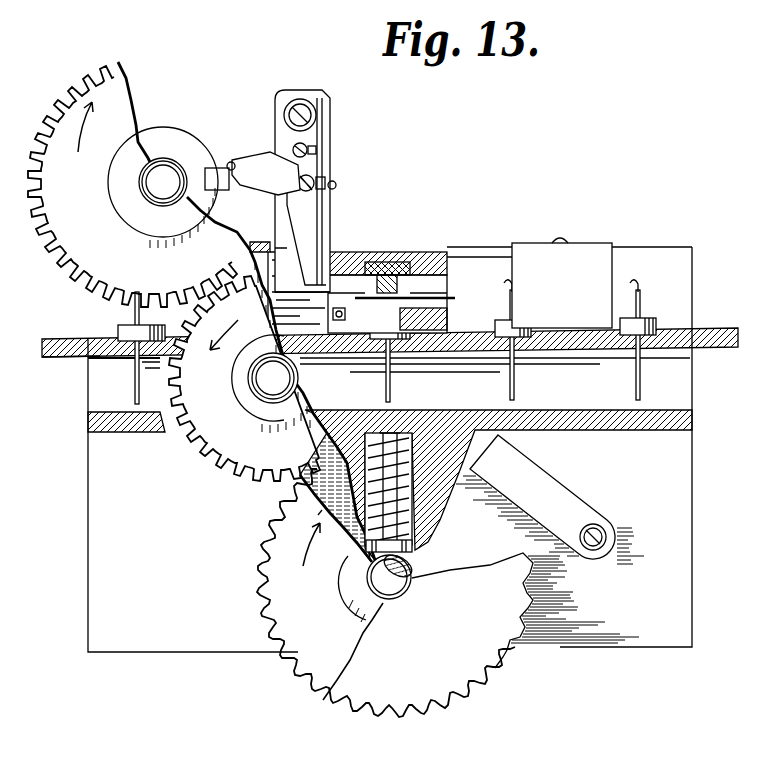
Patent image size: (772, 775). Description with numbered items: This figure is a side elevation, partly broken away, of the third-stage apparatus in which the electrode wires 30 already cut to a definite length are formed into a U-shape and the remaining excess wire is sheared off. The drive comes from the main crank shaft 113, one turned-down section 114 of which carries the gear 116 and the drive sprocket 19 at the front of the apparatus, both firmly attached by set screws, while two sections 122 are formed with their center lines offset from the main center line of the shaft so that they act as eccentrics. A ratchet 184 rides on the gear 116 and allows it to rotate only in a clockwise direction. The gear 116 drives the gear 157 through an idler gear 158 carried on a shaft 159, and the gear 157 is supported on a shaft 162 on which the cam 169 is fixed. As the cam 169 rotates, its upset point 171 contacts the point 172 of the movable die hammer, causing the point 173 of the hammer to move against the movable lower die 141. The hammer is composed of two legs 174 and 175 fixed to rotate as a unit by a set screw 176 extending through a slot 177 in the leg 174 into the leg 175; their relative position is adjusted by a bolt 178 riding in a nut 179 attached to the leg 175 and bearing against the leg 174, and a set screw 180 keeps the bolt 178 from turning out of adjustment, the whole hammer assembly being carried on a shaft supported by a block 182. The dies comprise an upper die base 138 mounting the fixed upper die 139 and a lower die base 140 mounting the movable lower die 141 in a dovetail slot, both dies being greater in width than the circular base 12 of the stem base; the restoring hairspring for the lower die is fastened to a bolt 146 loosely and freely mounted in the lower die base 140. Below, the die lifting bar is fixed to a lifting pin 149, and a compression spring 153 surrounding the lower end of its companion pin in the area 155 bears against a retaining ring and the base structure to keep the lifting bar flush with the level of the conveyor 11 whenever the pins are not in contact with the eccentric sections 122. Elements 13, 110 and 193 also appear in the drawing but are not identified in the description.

The conveyor 11 is at (52, 355).
The circular base 12 is at (660, 330).
The pin 13 is at (640, 300).
The drive sprocket 19 is at (432, 702).
The electrode wire 30 is at (632, 285).
The housing body 110 is at (160, 652).
The main crank shaft 113 is at (410, 566).
The shaft section 114 is at (392, 590).
The gear 116 is at (304, 650).
The eccentric sections 122 is at (406, 585).
The upper die base 138 is at (440, 252).
The fixed upper die 139 is at (392, 262).
The lower die base 140 is at (531, 328).
The movable lower die 141 is at (447, 312).
The bolt 146 is at (333, 312).
The lifting pin 149 is at (412, 500).
The compression spring 153 is at (412, 545).
The area 155 is at (348, 488).
The gear 157 is at (62, 264).
The idler gear 158 is at (218, 472).
The shaft 159 is at (262, 386).
The shaft 162 is at (152, 190).
The cam 169 is at (192, 129).
The upset point 171 is at (232, 186).
The hammer contact point 172 is at (231, 161).
The hammer striking point 173 is at (322, 262).
The hammer leg 174 is at (316, 170).
The hammer leg 175 is at (312, 232).
The set screw 176 is at (306, 148).
The slot 177 is at (316, 150).
The adjusting bolt 178 is at (336, 187).
The nut 179 is at (326, 182).
The set screw 180 is at (270, 158).
The block 182 is at (318, 100).
The ratchet 184 is at (560, 492).
The block 193 is at (585, 252).